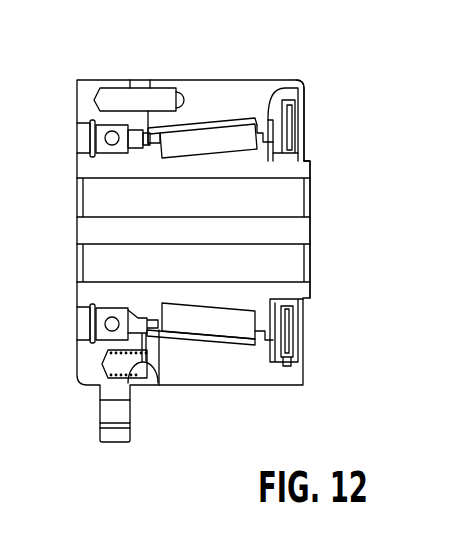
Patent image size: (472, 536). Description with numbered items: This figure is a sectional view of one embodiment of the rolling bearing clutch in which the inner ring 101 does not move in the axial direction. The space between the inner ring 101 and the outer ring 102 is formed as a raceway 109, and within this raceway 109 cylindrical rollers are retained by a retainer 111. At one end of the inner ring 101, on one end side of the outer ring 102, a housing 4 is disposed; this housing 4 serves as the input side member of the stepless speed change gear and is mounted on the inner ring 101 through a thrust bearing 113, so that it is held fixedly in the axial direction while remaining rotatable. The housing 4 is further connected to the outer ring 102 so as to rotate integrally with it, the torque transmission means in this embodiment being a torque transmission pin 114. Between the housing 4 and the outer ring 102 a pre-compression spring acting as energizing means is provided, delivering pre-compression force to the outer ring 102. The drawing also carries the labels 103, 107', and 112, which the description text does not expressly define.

The housing 4 is at (85, 380).
The inner ring 101 is at (310, 163).
The outer ring 102 is at (268, 88).
The lower slider 103 is at (241, 340).
The serrated pawl 107' is at (151, 396).
The raceway 109 is at (266, 140).
The retainer 111 is at (221, 118).
The housing top right wall 112 is at (304, 96).
The thrust bearing 113 is at (105, 137).
The torque transmission pin 114 is at (131, 80).